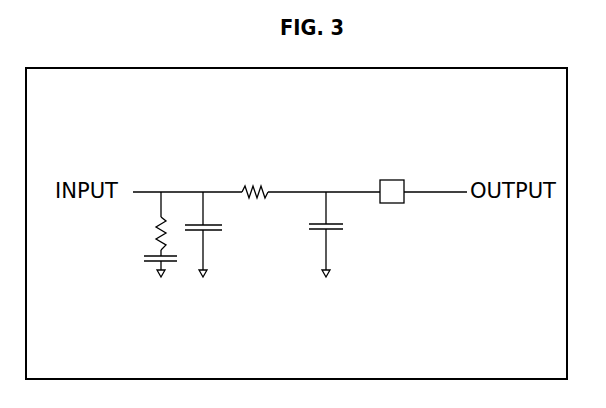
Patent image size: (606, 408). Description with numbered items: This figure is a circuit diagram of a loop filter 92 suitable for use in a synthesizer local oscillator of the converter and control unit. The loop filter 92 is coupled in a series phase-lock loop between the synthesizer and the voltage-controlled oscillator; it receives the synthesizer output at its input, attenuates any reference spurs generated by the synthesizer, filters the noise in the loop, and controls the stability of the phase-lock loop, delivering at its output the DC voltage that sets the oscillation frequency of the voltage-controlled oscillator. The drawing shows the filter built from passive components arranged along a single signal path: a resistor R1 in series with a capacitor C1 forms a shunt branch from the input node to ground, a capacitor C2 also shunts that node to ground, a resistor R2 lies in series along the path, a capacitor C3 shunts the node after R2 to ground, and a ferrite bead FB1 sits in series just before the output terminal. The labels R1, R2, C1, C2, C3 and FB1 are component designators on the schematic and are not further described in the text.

The loop filter 92 is at (437, 68).
The resistor R1 is at (129, 224).
The resistor R2 is at (254, 175).
The capacitor C1 is at (135, 263).
The capacitor C2 is at (221, 234).
The capacitor C3 is at (348, 234).
The ferrite bead FB1 is at (389, 178).